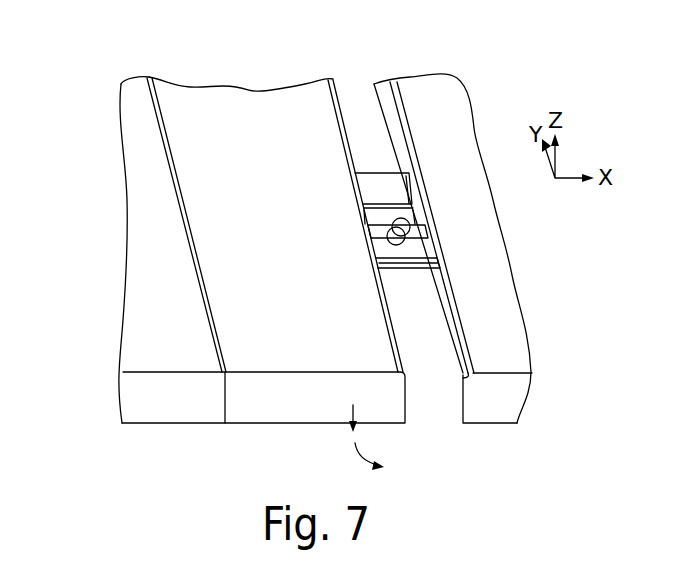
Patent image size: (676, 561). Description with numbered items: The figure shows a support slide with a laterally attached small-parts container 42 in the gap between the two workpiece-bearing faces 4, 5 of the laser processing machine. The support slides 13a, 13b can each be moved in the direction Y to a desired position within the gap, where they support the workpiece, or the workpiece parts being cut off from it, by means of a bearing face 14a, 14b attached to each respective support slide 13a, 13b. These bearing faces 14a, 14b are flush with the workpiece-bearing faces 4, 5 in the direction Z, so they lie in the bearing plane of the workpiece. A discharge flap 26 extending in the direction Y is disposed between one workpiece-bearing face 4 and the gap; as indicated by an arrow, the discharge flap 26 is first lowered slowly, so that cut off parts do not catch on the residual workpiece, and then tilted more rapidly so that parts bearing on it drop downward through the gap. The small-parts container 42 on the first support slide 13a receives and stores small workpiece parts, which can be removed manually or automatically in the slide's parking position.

The workpiece-bearing face 4 is at (515, 315).
The workpiece-bearing face 5 is at (153, 262).
The discharge flap 26 is at (257, 112).
The first support slide 13a is at (379, 208).
The second support slide 13b is at (391, 286).
The bearing face 14a is at (412, 213).
The bearing face 14b is at (418, 252).
The small-parts container 42 is at (383, 190).